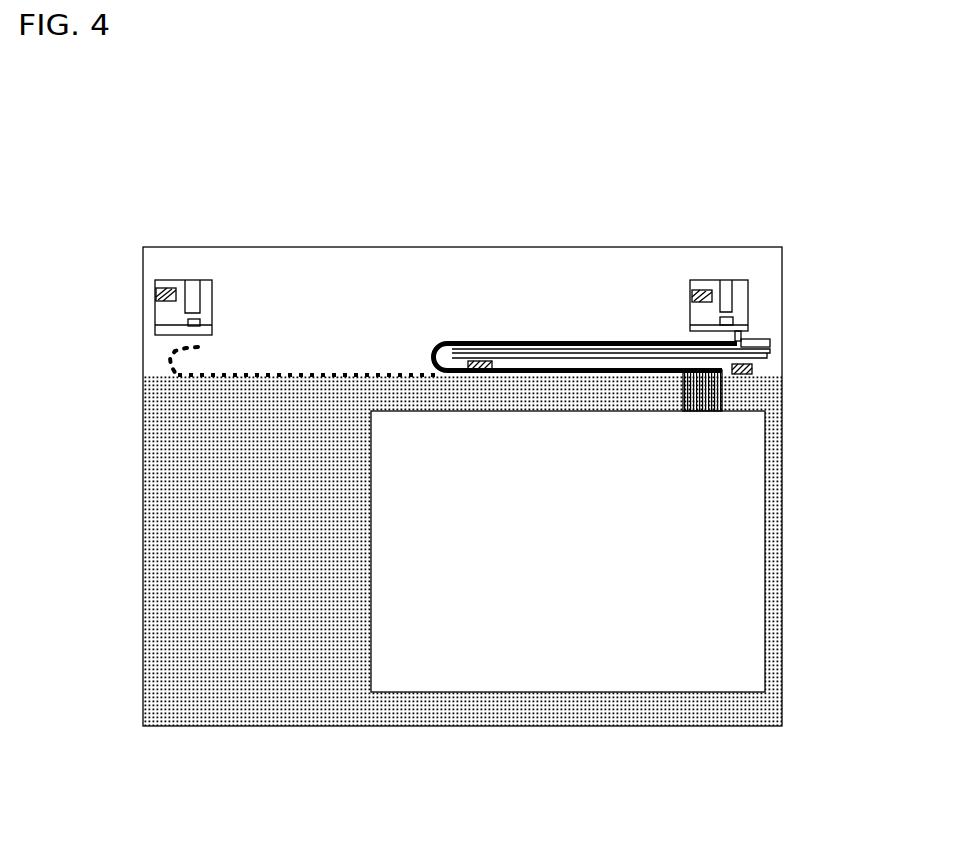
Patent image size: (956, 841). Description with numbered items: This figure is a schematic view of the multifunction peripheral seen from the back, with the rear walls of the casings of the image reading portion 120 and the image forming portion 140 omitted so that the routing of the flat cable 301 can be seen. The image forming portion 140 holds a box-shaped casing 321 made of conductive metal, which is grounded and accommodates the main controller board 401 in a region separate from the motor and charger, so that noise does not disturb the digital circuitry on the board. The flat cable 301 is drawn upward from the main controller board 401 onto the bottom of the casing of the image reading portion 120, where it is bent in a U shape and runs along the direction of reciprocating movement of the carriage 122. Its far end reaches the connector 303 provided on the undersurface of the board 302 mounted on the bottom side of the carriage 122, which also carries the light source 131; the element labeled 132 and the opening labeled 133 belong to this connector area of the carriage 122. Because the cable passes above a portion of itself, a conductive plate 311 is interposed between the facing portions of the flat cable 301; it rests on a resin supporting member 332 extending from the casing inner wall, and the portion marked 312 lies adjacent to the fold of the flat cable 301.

The image reading portion 120 is at (143, 327).
The carriage 122 is at (690, 286).
The light source 131 is at (704, 302).
The connector housing bottom portion 132 is at (735, 320).
The connector slot 133 is at (748, 283).
The flat cable 301 is at (437, 361).
The board 302 is at (748, 328).
The connector 303 is at (760, 345).
The conductive plate 311 is at (523, 352).
The flexible cable fixing portion 312 is at (458, 360).
The supporting member 332 is at (607, 352).
The casing 321 is at (143, 441).
The image forming portion 140 is at (143, 538).
The main controller board 401 is at (748, 527).